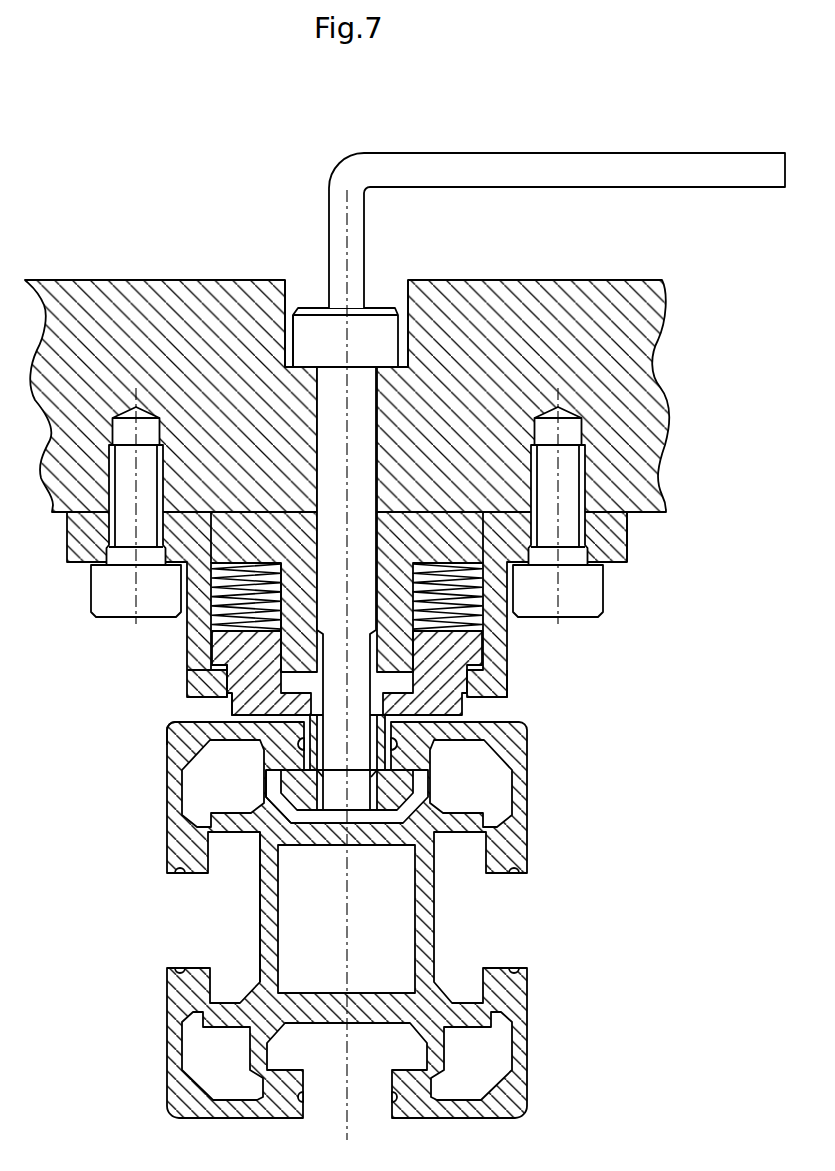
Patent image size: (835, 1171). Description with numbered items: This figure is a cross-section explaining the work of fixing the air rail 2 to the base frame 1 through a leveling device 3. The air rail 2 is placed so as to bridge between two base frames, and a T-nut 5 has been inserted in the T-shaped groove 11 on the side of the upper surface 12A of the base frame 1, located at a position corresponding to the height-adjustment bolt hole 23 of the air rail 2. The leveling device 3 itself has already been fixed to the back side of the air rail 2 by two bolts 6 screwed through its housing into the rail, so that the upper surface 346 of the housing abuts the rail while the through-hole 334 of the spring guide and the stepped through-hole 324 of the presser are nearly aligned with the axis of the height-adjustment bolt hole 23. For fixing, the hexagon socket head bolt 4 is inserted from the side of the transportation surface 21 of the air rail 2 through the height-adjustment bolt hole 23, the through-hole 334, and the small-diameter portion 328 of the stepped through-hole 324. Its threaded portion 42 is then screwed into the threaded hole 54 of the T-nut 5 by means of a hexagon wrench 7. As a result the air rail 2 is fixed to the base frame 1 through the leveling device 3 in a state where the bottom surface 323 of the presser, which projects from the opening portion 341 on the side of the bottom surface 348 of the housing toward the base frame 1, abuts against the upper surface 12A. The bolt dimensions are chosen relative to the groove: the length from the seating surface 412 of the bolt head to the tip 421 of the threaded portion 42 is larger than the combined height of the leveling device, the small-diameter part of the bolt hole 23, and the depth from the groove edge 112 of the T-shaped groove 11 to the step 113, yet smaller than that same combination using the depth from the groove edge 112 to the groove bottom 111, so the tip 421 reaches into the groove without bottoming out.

The base frame 1 is at (345, 906).
The T-shaped groove 11 is at (278, 797).
The groove bottom 111 is at (291, 821).
The groove edge 112 is at (170, 729).
The step 113 is at (262, 776).
The upper surface 12A is at (506, 721).
The air rail 2 is at (347, 368).
The transportation surface 21 is at (478, 279).
The height-adjustment bolt hole 23 is at (403, 282).
The leveling device 3 is at (375, 618).
The bottom surface 323 is at (228, 713).
The stepped through-hole 324 is at (309, 683).
The small-diameter portion 328 is at (226, 669).
The through-hole 334 is at (313, 597).
The opening portion 341 is at (226, 700).
The upper surface 346 is at (626, 512).
The bottom surface 348 is at (508, 698).
The hexagon socket head bolt 4 is at (304, 565).
The seating surface 412 is at (291, 366).
The threaded portion 42 is at (301, 624).
The tip 421 is at (357, 780).
The T-nut 5 is at (375, 798).
The threaded hole 54 is at (347, 812).
The bolt 6 is at (98, 616).
The hexagon wrench 7 is at (630, 152).